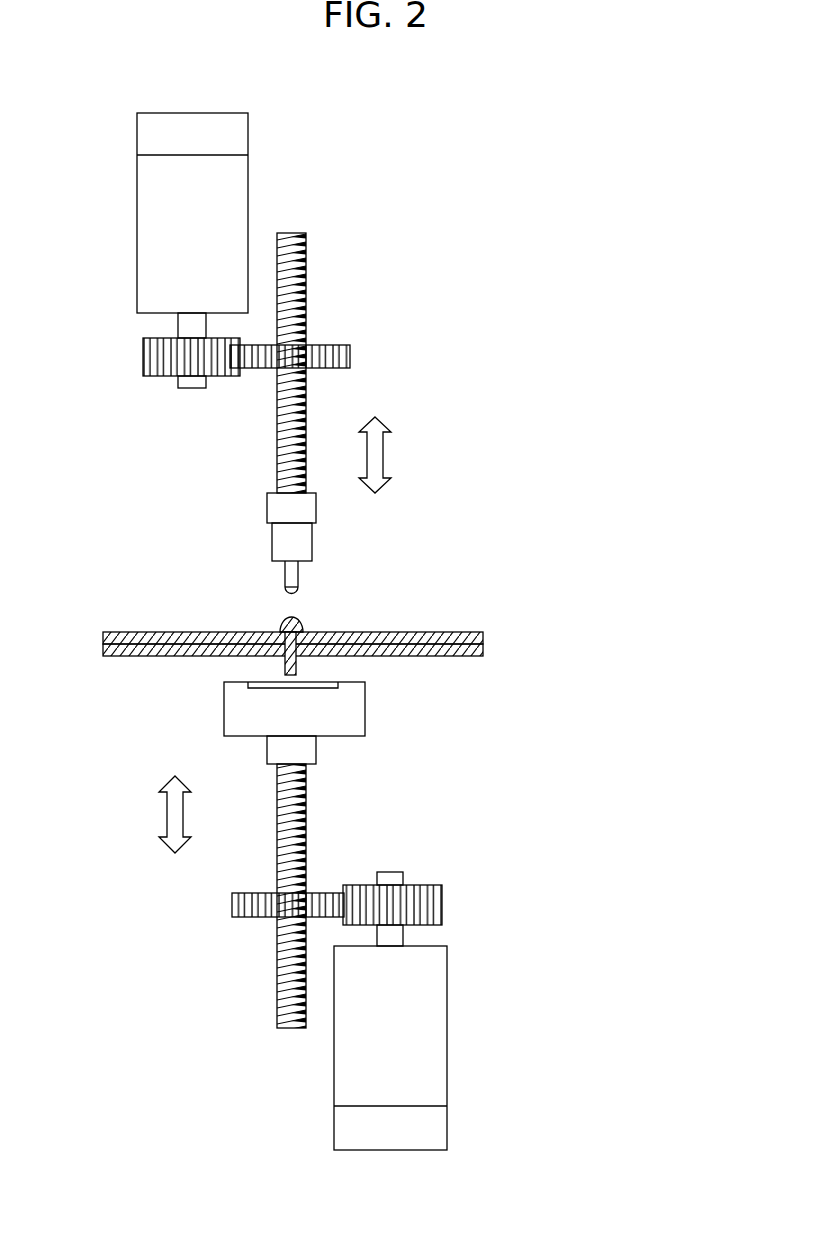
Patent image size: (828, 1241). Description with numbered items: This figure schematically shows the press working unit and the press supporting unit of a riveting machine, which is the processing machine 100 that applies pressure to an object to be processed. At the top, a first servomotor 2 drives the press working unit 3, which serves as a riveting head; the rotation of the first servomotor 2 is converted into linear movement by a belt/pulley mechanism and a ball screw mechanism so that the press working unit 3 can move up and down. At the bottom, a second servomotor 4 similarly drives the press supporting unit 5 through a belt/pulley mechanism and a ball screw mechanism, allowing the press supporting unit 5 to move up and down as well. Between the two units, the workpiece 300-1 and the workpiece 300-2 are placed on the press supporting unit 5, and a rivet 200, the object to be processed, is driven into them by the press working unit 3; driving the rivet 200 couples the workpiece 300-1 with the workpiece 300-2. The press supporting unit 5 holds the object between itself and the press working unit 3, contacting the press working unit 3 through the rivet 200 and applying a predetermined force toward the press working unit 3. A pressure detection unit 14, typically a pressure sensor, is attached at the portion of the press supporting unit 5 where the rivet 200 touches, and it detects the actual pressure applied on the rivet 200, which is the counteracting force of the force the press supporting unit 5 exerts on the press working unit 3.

The processing machine 100 is at (509, 200).
The first servomotor 2 is at (248, 177).
The press working unit 3 is at (282, 578).
The second servomotor 4 is at (447, 1017).
The press supporting unit 5 is at (224, 713).
The pressure detection unit 14 is at (272, 680).
The rivet 200 is at (302, 618).
The workpiece 300-1 is at (436, 632).
The workpiece 300-2 is at (436, 657).